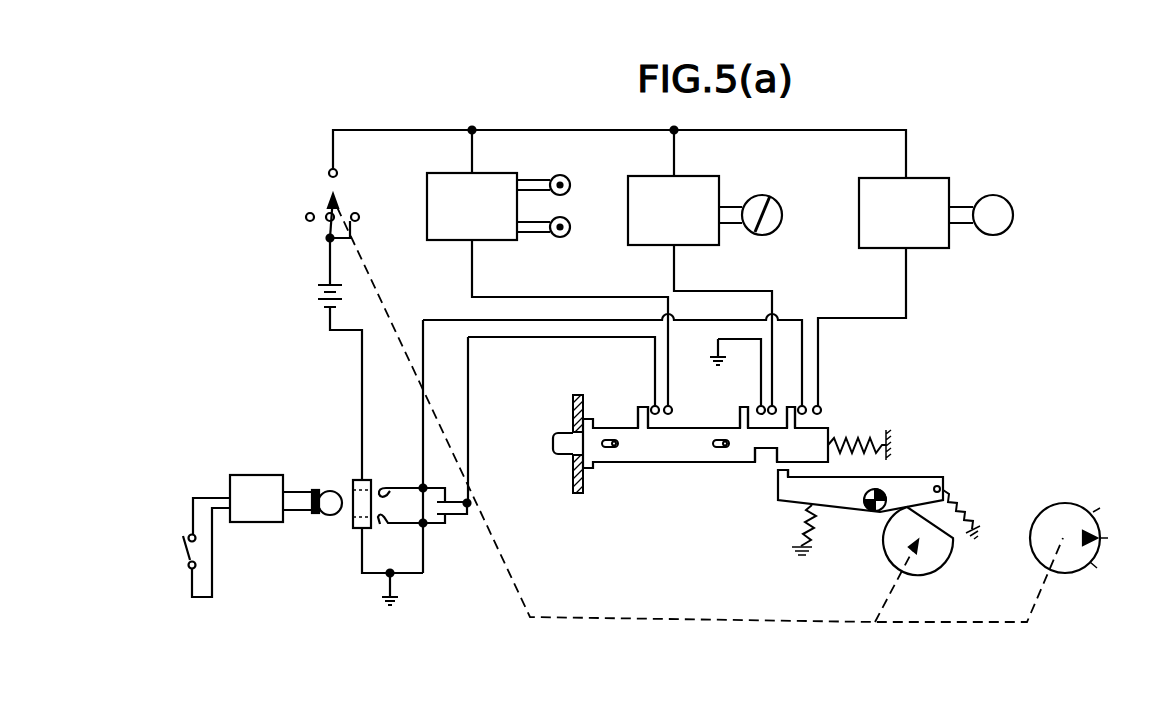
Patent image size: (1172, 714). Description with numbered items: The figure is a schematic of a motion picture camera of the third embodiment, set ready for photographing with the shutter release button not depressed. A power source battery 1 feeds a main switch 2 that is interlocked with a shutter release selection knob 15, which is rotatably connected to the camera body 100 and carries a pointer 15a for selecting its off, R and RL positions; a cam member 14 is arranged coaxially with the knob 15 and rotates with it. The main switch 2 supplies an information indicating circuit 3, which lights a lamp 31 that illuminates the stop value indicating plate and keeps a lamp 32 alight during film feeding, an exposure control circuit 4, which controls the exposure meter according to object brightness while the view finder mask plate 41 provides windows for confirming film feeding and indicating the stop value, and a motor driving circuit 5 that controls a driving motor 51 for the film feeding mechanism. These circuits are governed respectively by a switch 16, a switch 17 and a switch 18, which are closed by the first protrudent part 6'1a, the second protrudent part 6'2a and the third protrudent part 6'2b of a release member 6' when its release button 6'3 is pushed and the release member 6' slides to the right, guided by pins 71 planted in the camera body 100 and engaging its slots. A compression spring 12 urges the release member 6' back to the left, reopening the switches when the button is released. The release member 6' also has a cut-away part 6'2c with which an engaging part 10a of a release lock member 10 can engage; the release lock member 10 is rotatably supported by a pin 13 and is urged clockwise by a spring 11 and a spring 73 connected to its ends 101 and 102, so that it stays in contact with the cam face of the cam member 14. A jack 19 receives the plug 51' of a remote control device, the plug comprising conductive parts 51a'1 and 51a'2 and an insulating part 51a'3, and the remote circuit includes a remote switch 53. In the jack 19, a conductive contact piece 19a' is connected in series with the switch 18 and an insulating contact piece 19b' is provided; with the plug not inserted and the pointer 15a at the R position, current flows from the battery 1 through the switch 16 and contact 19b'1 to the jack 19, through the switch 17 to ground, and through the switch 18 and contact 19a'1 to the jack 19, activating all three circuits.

The power source battery 1 is at (320, 296).
The main switch 2 is at (337, 190).
The information indicating circuit 3 is at (497, 178).
The lamp 31 is at (568, 180).
The lamp 32 is at (568, 222).
The exposure control circuit 4 is at (693, 180).
The view finder mask plate 41 is at (760, 196).
The motor driving circuit 5 is at (945, 182).
The driving motor 51 is at (1010, 200).
The plug of remote control device 51' is at (237, 516).
The conductive part 51a'1 is at (308, 475).
The conductive part 51a'2 is at (278, 532).
The insulating part 51a'3 is at (302, 545).
The remote switch 53 is at (187, 550).
The jack 19 is at (353, 526).
The conductive contact piece 19a' is at (398, 470).
The contact 19a'1 is at (469, 490).
The insulating contact piece 19b' is at (397, 542).
The contact 19b'1 is at (445, 541).
The switch 16 is at (655, 403).
The switch 17 is at (760, 402).
The switch 18 is at (820, 411).
The release member 6' is at (705, 457).
The release button 6'3 is at (544, 428).
The first protrudent part 6'1a is at (621, 409).
The second protrudent part 6'2a is at (713, 412).
The third protrudent part 6'2b is at (830, 397).
The cut-away part 6'2c is at (740, 487).
The pins 71 is at (612, 448).
The camera body 100 is at (575, 485).
The compression spring 12 is at (862, 440).
The release lock member 10 is at (838, 502).
The end of release lock member 101 is at (855, 500).
The end of release lock member 102 is at (942, 487).
The engaging part 10a is at (780, 482).
The pin 13 is at (885, 492).
The spring 11 is at (806, 550).
The spring 73 is at (966, 510).
The cam member 14 is at (930, 572).
The shutter release selection knob 15 is at (1070, 573).
The pointer 15a is at (1086, 536).